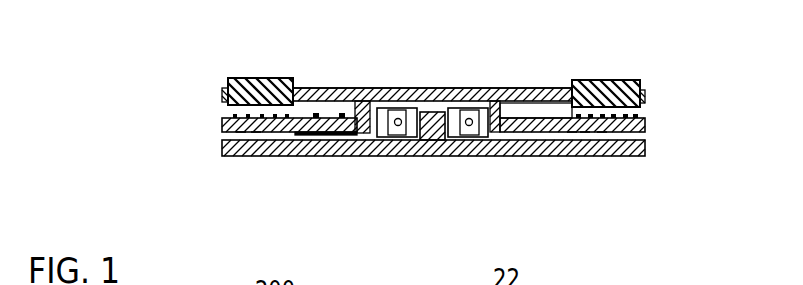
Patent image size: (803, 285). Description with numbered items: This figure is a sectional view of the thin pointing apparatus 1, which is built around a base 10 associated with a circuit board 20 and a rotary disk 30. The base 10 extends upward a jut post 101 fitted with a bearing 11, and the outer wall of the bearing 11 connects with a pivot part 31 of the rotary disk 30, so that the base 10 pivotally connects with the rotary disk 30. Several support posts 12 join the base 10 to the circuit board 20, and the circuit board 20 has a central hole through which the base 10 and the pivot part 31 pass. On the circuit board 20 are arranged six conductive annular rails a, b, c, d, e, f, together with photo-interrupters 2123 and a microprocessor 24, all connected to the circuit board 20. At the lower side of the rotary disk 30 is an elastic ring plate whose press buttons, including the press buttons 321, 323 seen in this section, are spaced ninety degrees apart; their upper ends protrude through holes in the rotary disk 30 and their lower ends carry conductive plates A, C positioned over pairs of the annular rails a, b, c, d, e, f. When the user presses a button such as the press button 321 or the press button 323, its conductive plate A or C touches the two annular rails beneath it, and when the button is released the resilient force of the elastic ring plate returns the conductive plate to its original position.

The electrical connector assembly 1 is at (437, 78).
The base 10 is at (625, 156).
The jut post 101 is at (432, 140).
The bearing 11 is at (400, 126).
The support posts 12 is at (223, 137).
The circuit board 20 is at (645, 122).
The conductive contacts 2123 is at (342, 114).
The microprocessor 24 is at (350, 135).
The rotary disk 30 is at (227, 88).
The pivot part 31 is at (497, 98).
The press button 321 is at (272, 90).
The press button 323 is at (622, 82).
The conductive plate A is at (245, 78).
The conductive plate C is at (597, 80).
The conductive annular rail a is at (230, 116).
The conductive annular rail b is at (241, 135).
The conductive annular rail c is at (256, 135).
The conductive annular rail d is at (602, 134).
The conductive annular rail e is at (585, 134).
The conductive annular rail f is at (572, 134).